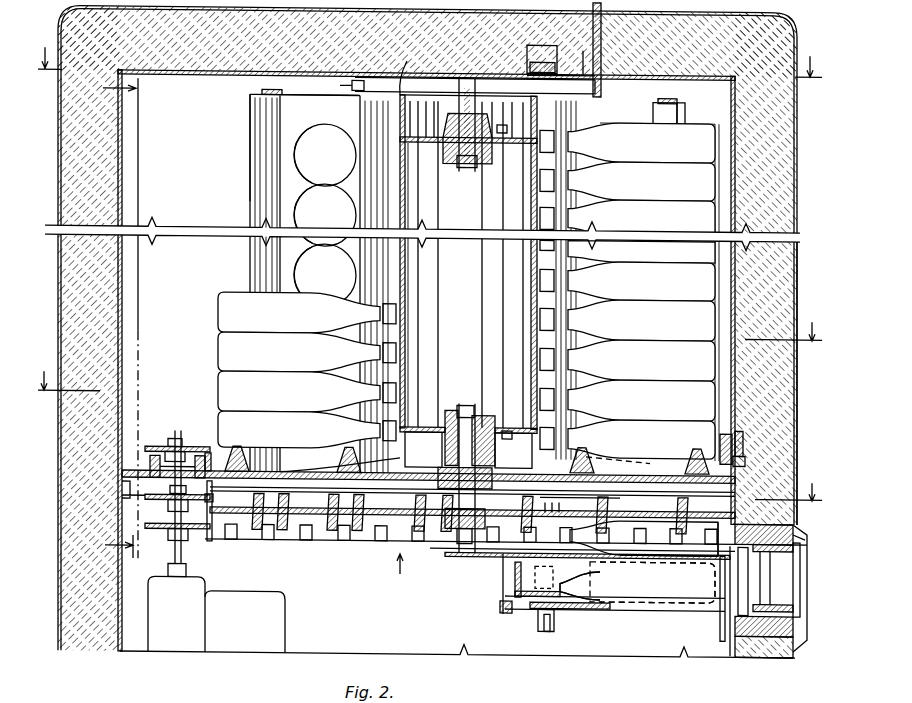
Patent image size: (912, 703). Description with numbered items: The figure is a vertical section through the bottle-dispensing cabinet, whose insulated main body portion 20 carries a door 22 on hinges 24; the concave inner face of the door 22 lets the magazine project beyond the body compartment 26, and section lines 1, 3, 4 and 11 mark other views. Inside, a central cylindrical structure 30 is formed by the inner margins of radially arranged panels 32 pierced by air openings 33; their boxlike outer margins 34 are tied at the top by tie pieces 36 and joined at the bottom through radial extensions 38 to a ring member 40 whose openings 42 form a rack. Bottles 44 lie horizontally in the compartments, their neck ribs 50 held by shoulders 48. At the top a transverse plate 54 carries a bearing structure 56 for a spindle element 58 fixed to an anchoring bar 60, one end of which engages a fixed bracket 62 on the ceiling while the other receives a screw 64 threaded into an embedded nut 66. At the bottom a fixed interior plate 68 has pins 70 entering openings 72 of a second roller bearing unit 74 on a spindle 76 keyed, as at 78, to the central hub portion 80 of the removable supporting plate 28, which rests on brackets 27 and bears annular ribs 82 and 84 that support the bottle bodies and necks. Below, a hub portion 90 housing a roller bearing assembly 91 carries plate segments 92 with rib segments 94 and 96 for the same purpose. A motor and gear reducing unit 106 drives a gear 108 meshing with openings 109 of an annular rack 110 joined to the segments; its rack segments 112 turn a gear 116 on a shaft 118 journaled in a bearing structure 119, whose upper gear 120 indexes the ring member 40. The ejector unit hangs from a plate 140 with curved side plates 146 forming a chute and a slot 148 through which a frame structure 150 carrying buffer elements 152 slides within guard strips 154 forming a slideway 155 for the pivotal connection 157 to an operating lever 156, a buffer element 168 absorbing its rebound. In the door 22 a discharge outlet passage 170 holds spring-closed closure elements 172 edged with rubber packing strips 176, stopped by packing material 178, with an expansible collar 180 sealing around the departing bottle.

The section line 1- 1 is at (430, 51).
The section line 3- 3 is at (430, 345).
The section line 4- 4 is at (607, 525).
The section line 11- 11 is at (109, 318).
The main body portion 20 is at (60, 224).
The door 22 is at (798, 225).
The hinges 24 is at (608, 48).
The body compartment 26 is at (171, 157).
The brackets 27 is at (122, 496).
The supporting plate 28 is at (122, 473).
The central cylindrical structure 30 is at (414, 67).
The panels 32 is at (310, 94).
The openings 33 is at (300, 213).
The outer margins 34 is at (262, 116).
The tie pieces 36 is at (264, 90).
The radial extensions 38 is at (233, 444).
The ring member 40 is at (215, 438).
The openings 42 is at (740, 451).
The bottles 44 is at (228, 343).
The shoulders 48 is at (388, 283).
The ribs 50 is at (388, 310).
The transverse plate 54 is at (548, 121).
The bearing structure 56 is at (490, 160).
The spindle element 58 is at (475, 118).
The anchoring bar 60 is at (430, 88).
The fixed bracket 62 is at (341, 84).
The screw 64 is at (580, 53).
The embedded nut 66 is at (540, 41).
The fixed interior plate 68 is at (412, 424).
The pins 70 is at (506, 434).
The openings 72 is at (507, 427).
The second roller bearing unit 74 is at (486, 412).
The spindle 76 is at (466, 402).
The key 78 is at (423, 449).
The central hub portion 80 is at (474, 487).
The annular rib 82 is at (700, 456).
The annular rib 84 is at (586, 452).
The hub portion 90 is at (459, 540).
The roller bearing assembly 91 is at (452, 495).
The plate segments 92 is at (715, 492).
The rib segments 94 is at (680, 511).
The rib segments 96 is at (600, 494).
The motor and gear reducing unit 106 is at (216, 607).
The gear 108 is at (160, 528).
The openings 109 is at (232, 526).
The annular rack 110 is at (208, 538).
The rack segments 112 is at (212, 495).
The gear 116 is at (165, 500).
The shaft 118 is at (175, 438).
The bearing structure 119 is at (171, 460).
The gear 120 is at (165, 449).
The plate 140 is at (486, 555).
The curved side plates 146 is at (503, 573).
The slot 148 is at (686, 597).
The frame structure 150 is at (560, 584).
The buffer elements 152 is at (545, 571).
The guard strips 154 is at (715, 617).
The slideway 155 is at (650, 610).
The operating lever 156 is at (538, 619).
The pivotal connection 157 is at (545, 629).
The buffer element 168 is at (500, 605).
The discharge outlet passage 170 is at (808, 633).
The closure elements 172 is at (748, 583).
The rubber packing strips 176 is at (748, 597).
The packing material 178 is at (746, 553).
The expansible collar 180 is at (798, 541).